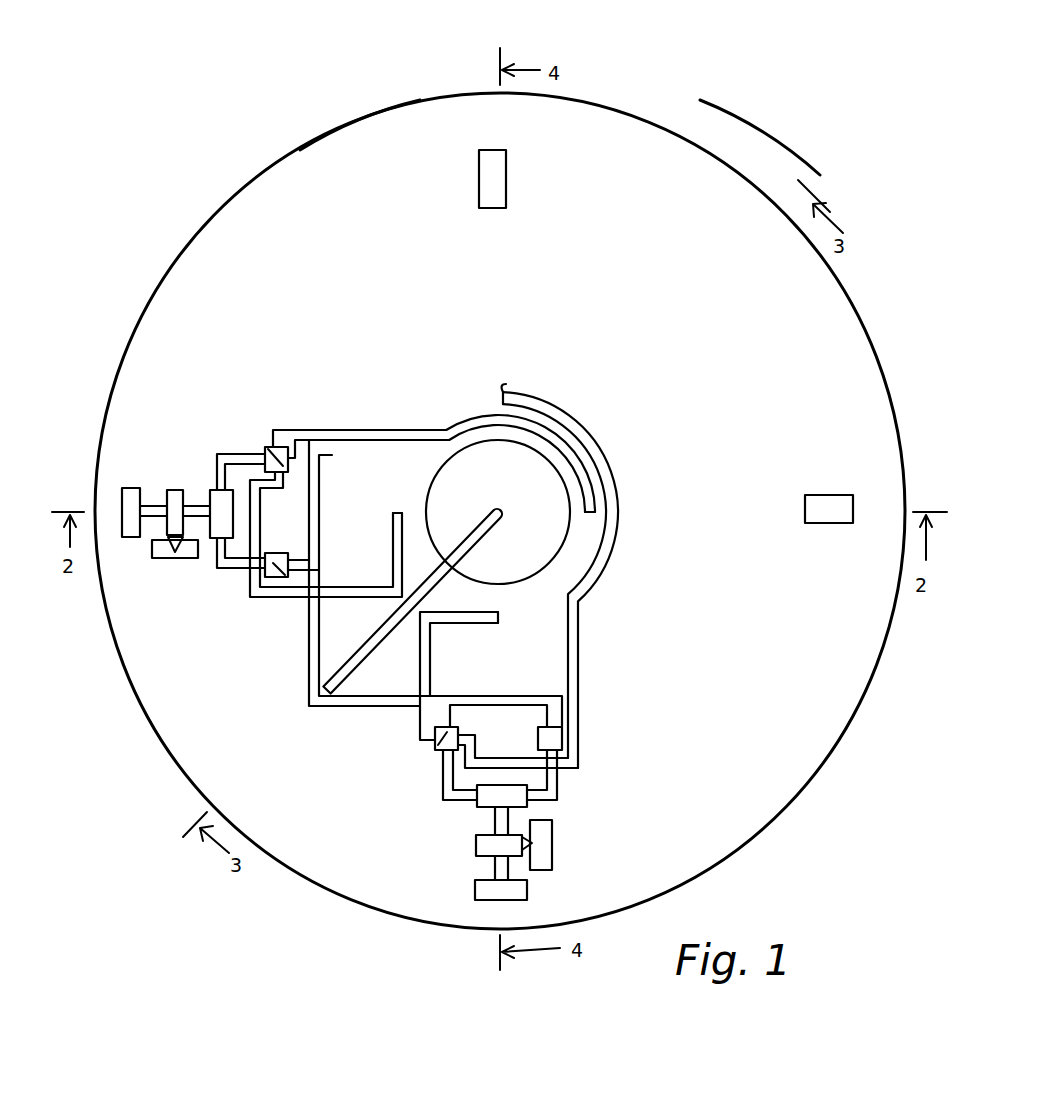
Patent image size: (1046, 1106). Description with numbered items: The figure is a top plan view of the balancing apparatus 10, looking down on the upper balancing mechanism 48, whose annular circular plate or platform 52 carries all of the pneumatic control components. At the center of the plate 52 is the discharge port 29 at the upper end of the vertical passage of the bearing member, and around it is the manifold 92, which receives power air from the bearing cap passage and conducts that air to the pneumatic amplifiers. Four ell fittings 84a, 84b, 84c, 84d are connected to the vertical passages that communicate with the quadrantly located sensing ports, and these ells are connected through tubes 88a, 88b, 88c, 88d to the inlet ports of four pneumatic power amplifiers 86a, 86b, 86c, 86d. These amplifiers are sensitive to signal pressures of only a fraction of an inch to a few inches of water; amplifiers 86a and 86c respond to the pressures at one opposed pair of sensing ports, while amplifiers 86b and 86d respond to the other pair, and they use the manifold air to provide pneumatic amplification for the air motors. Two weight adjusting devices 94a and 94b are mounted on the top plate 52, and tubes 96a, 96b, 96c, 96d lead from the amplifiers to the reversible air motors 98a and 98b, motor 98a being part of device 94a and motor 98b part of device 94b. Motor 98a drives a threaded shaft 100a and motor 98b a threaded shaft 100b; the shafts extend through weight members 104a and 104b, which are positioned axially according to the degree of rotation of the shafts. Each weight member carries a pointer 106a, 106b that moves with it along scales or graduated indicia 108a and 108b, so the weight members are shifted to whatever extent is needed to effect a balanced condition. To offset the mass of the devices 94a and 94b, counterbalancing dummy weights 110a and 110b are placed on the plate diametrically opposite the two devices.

The apparatus 10 is at (691, 86).
The upper balancing mechanism 48 is at (252, 146).
The plate or platform 52 is at (352, 122).
The discharge port 29 is at (503, 512).
The manifold 92 is at (462, 519).
The ell fitting 84a is at (393, 513).
The ell fitting 84b is at (500, 612).
The ell fitting 84c is at (592, 513).
The ell fitting 84d is at (506, 384).
The pneumatic power amplifier 86a is at (288, 577).
The pneumatic power amplifier 86b is at (438, 742).
The pneumatic power amplifier 86c is at (268, 449).
The pneumatic power amplifier 86d is at (548, 737).
The tube 88a is at (358, 587).
The tube 88b is at (431, 662).
The tube 88c is at (328, 430).
The tube 88d is at (583, 638).
The weight adjusting device 94a is at (140, 494).
The weight adjusting device 94b is at (489, 869).
The tube 96a is at (222, 568).
The tube 96b is at (443, 788).
The tube 96c is at (226, 454).
The tube 96d is at (558, 797).
The reversible air motor 98a is at (208, 490).
The reversible air motor 98b is at (477, 806).
The threaded shaft 100a is at (183, 490).
The threaded shaft 100b is at (477, 838).
The weight member 104a is at (166, 490).
The weight member 104b is at (476, 853).
The pointer 106a is at (165, 558).
The pointer 106b is at (553, 830).
The scale or graduated indicia 108a is at (153, 555).
The scale or graduated indicia 108b is at (553, 858).
The counterbalancing dummy weight 110a is at (830, 495).
The counterbalancing dummy weight 110b is at (506, 178).